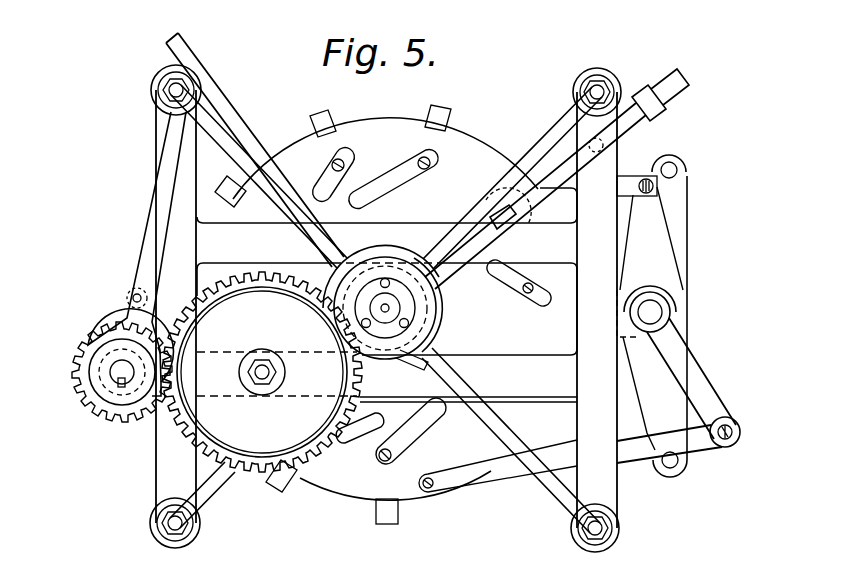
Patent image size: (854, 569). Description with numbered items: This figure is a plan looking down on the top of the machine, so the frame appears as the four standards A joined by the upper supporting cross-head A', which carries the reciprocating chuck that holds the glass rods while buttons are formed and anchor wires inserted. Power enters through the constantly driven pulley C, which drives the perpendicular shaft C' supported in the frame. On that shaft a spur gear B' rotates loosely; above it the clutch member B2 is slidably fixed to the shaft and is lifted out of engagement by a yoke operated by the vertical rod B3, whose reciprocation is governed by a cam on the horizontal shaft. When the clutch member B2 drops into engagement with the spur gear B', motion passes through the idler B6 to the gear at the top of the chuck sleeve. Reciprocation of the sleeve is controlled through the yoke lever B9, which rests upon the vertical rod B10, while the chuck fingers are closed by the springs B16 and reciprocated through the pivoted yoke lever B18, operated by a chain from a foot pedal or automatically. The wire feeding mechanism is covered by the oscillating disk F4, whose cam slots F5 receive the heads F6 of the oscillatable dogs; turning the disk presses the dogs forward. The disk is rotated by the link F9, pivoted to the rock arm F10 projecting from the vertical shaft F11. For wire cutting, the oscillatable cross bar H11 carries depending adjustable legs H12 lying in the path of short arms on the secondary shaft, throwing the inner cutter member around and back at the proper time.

The standards A is at (385, 310).
The upper supporting cross-head A' is at (385, 315).
The spur gear B' is at (122, 391).
The clutch member B2 is at (102, 367).
The vertical rod B3 is at (133, 296).
The idler B6 is at (262, 372).
The yoke lever B9 is at (543, 197).
The vertical rod B10 is at (603, 145).
The springs B16 is at (413, 317).
The yoke lever B18 is at (262, 135).
The pulley C is at (376, 337).
The perpendicular shaft C' is at (87, 400).
The disk F4 is at (432, 448).
The cam slots F5 is at (418, 175).
The heads of the oscillatable dogs F6 is at (380, 457).
The link F9 is at (643, 447).
The rock arm F10 is at (700, 390).
The vertical shaft F11 is at (655, 310).
The oscillatable cross bar H11 is at (680, 233).
The adjustable legs H12 is at (674, 170).